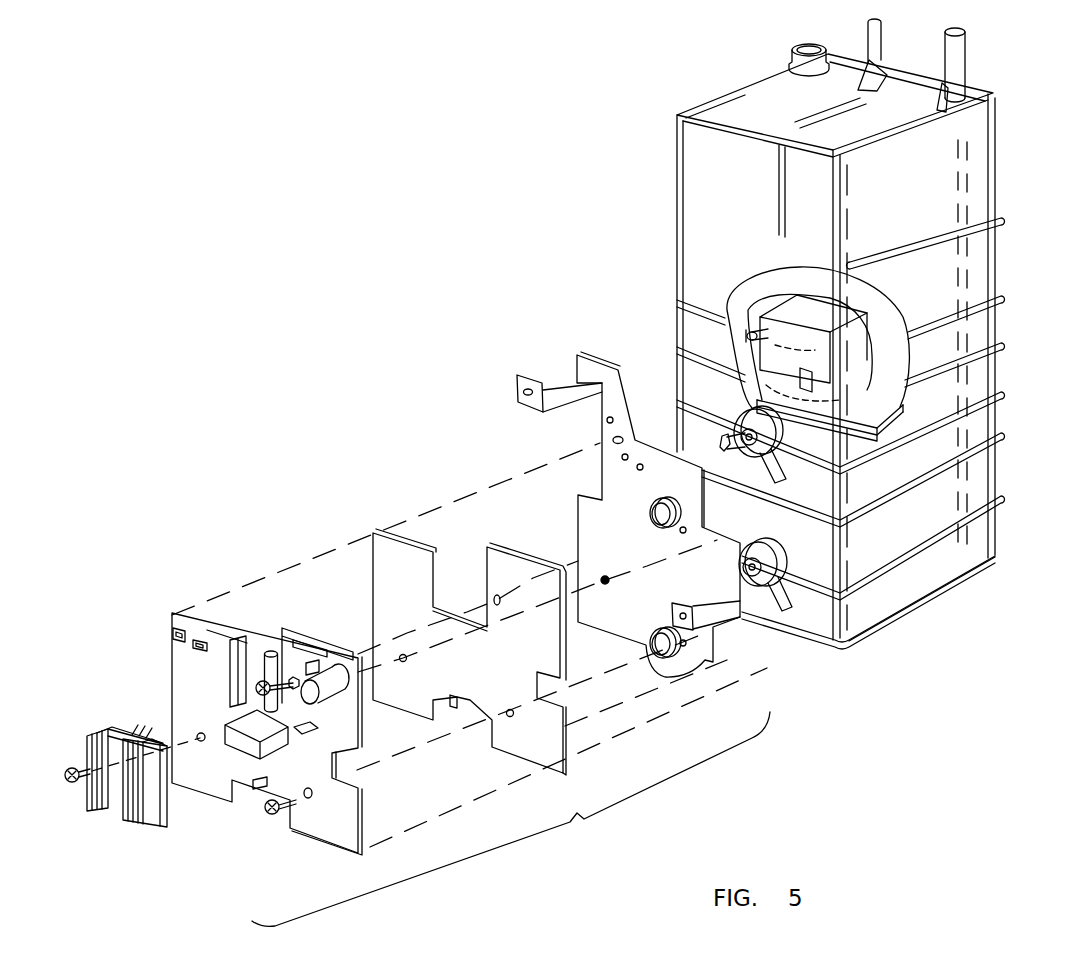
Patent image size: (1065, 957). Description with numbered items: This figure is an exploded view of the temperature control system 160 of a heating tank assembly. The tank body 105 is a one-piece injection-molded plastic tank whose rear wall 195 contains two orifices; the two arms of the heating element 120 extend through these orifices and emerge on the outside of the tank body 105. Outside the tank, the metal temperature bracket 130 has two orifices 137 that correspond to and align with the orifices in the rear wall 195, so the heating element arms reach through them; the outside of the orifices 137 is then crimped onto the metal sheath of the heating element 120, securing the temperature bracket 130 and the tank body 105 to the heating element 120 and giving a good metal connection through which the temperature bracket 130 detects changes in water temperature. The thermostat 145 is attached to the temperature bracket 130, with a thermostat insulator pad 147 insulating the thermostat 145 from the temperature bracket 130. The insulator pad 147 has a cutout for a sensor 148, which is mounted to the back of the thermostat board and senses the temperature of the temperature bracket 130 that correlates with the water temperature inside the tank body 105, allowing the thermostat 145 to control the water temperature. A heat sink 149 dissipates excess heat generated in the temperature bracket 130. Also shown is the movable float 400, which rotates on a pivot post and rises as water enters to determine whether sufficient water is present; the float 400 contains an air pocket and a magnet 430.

The tank body 105 is at (945, 585).
The heating element 120 is at (864, 427).
The temperature bracket 130 is at (558, 388).
The orifices 137 is at (652, 508).
The thermostat 145 is at (358, 828).
The thermostat insulator pad 147 is at (395, 531).
The sensor 148 is at (252, 790).
The heat sink 149 is at (100, 729).
The temperature control system 160 is at (511, 819).
The rear wall 195 is at (700, 220).
The float 400 is at (885, 296).
The magnet 430 is at (762, 342).